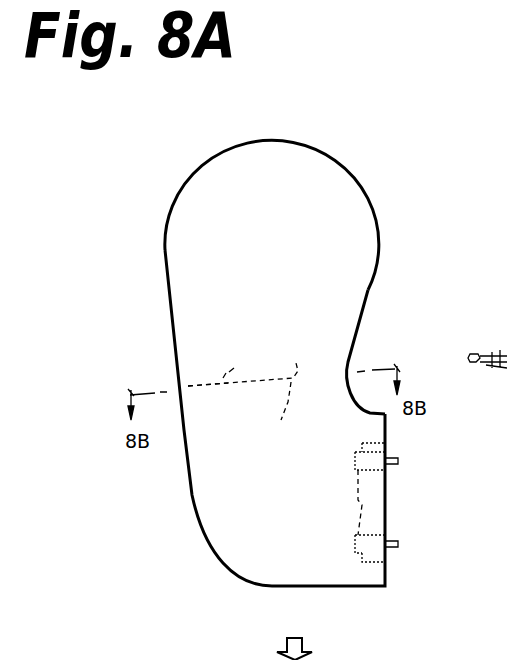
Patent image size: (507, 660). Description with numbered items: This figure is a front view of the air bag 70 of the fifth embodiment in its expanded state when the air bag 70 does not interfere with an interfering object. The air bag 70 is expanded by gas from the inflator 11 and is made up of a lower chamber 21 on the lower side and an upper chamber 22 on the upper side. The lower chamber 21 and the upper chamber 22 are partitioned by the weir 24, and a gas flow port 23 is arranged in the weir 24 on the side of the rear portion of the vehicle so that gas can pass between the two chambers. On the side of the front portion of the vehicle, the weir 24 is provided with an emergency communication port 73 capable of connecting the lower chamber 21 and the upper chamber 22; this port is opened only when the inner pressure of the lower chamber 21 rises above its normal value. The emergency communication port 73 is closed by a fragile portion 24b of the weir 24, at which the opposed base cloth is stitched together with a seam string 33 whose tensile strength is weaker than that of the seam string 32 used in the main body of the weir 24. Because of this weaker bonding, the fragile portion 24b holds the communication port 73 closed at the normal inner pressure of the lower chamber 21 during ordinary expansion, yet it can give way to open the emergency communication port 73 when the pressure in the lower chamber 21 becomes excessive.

The air bag 70 is at (407, 184).
The upper chamber 22 is at (241, 170).
The gas flow port 23 is at (318, 372).
The lower chamber 21 is at (228, 533).
The weir 24 is at (267, 362).
The fragile portion 24b is at (231, 393).
The seam string 33 is at (494, 350).
The emergency communication port 73 is at (203, 364).
The seam string 32 is at (285, 415).
The inflator 11 is at (376, 505).